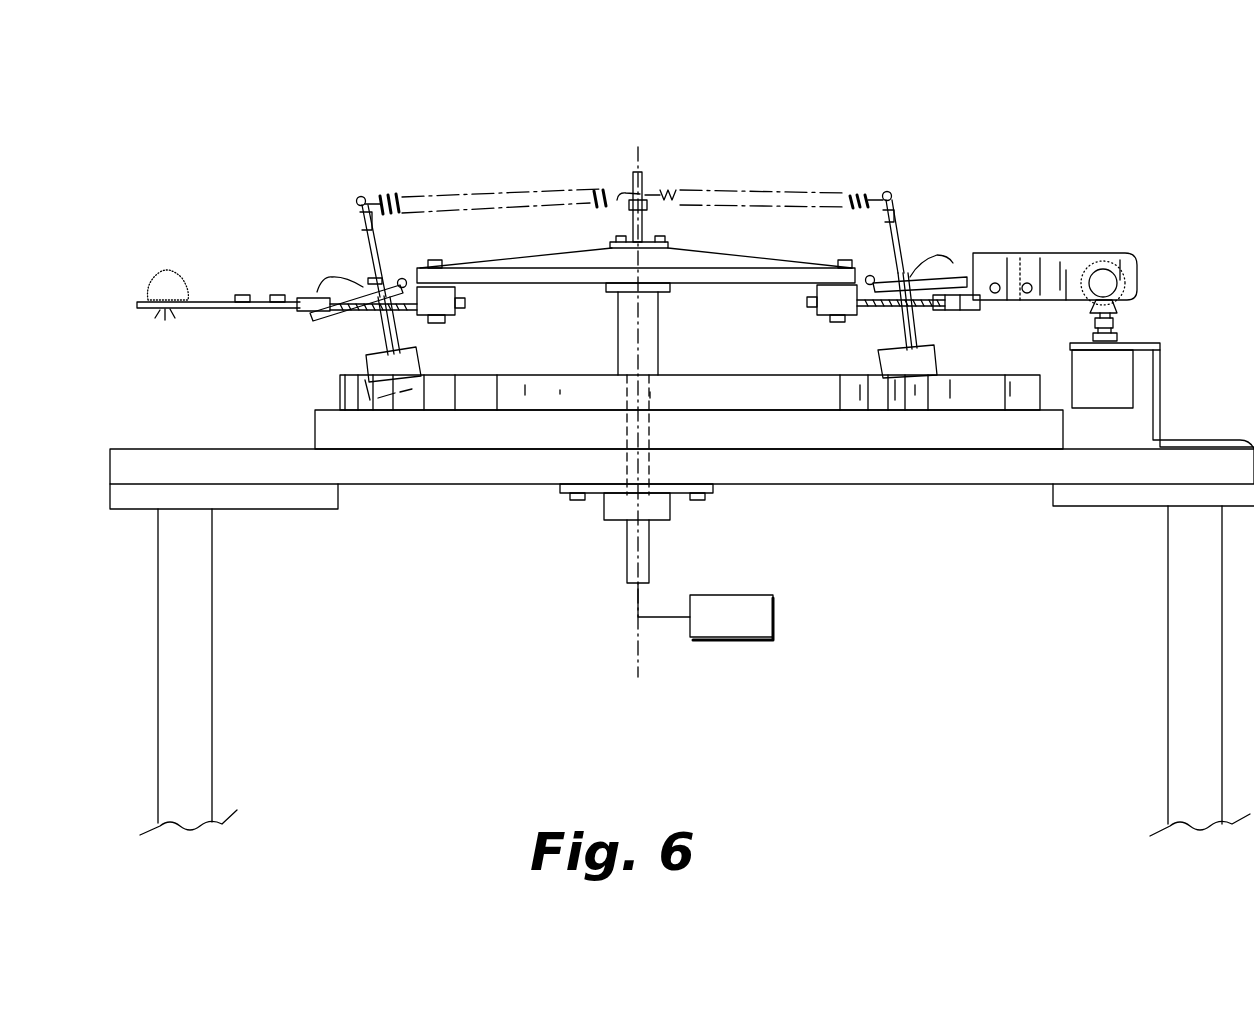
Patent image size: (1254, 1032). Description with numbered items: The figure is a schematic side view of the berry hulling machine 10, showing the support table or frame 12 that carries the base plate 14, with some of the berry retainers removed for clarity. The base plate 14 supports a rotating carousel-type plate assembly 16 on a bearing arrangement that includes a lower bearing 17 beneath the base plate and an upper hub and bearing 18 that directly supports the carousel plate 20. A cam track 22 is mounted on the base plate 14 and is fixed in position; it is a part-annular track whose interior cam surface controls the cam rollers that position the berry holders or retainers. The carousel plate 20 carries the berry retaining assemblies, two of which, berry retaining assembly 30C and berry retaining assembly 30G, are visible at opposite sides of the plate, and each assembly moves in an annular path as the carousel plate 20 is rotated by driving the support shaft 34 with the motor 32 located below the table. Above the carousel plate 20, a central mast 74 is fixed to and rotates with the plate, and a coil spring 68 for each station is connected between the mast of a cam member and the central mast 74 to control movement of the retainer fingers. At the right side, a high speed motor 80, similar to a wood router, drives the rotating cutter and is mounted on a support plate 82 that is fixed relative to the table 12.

The berry hulling machine 10 is at (828, 176).
The support table or frame 12 is at (257, 507).
The base plate 14 is at (207, 447).
The carousel-type plate assembly 16 is at (412, 189).
The lower bearing 17 is at (600, 493).
The upper hub and bearing 18 is at (660, 333).
The carousel plate 20 is at (748, 277).
The cam track 22 is at (338, 392).
The berry retaining assembly 30C is at (264, 307).
The berry retaining assembly 30G is at (950, 248).
The motor 32 is at (753, 593).
The support shaft 34 is at (628, 567).
The coil spring 68 is at (470, 195).
The central mast 74 is at (642, 226).
The high speed motor 80 is at (1113, 337).
The support plate 82 is at (1160, 373).